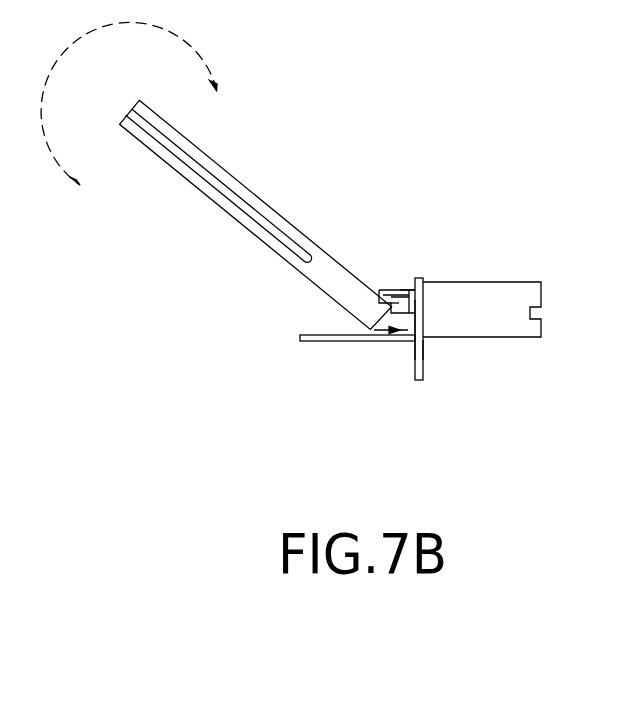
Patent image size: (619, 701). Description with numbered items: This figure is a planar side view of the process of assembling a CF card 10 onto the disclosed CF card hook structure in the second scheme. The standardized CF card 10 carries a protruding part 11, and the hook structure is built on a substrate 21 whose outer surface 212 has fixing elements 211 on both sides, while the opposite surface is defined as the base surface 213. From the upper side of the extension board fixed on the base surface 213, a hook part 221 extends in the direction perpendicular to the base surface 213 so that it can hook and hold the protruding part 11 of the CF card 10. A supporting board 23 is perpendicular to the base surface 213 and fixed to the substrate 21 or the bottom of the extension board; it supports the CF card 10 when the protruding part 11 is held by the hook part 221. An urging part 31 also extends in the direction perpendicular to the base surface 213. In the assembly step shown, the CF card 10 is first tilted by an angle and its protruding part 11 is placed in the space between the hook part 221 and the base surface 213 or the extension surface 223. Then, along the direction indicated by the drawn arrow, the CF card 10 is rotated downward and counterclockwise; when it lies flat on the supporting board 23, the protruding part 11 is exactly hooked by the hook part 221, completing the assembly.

The CF card 10 is at (268, 206).
The protruding part 11 is at (400, 289).
The substrate 21 is at (420, 365).
The fixing elements 211 is at (505, 320).
The outer surface 212 is at (425, 370).
The base surface 213 is at (413, 370).
The hook part 221 is at (388, 288).
The extension surface 223 is at (360, 336).
The supporting board 23 is at (298, 338).
The urging part 31 is at (392, 304).